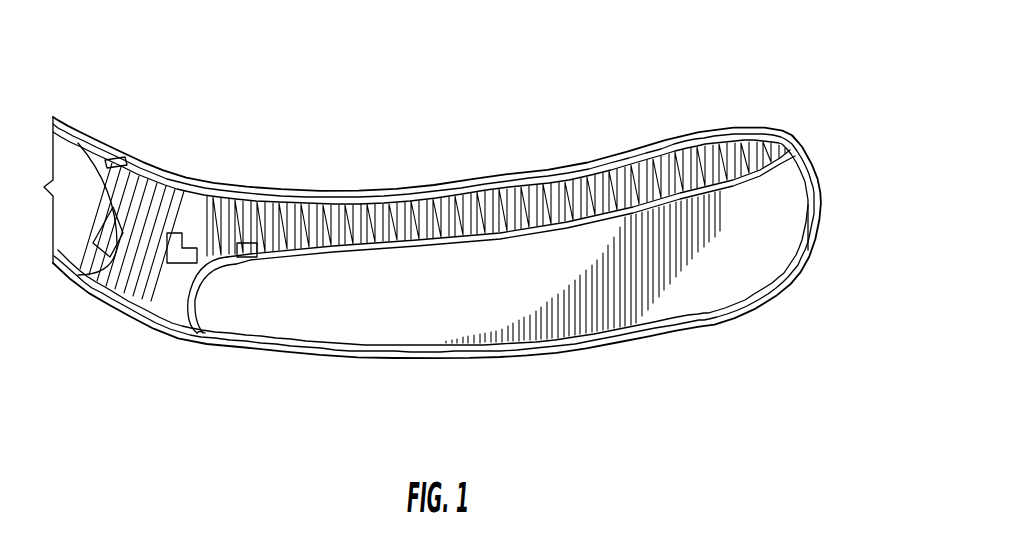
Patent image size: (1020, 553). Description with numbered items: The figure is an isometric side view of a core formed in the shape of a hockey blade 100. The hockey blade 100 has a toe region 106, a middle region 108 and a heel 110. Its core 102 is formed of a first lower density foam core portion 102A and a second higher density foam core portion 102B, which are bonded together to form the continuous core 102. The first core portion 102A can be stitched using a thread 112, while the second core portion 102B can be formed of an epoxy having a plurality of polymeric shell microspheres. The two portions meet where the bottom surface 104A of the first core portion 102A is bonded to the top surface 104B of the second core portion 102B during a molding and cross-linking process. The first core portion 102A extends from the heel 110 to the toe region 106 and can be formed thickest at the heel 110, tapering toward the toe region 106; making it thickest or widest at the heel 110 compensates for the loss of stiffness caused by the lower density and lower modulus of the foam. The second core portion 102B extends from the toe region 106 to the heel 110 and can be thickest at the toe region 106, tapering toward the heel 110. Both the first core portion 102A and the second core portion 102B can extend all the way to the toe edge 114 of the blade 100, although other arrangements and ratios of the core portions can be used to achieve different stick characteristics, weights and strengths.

The hockey blade 100 is at (331, 168).
The core 102 is at (600, 222).
The first lower density foam core portion 102A is at (437, 212).
The second higher density foam core portion 102B is at (393, 317).
The bottom surface 104A is at (283, 243).
The top surface 104B is at (455, 243).
The toe region 106 is at (790, 197).
The middle region 108 is at (538, 287).
The heel 110 is at (207, 338).
The thread 112 is at (168, 210).
The toe edge 114 is at (797, 137).